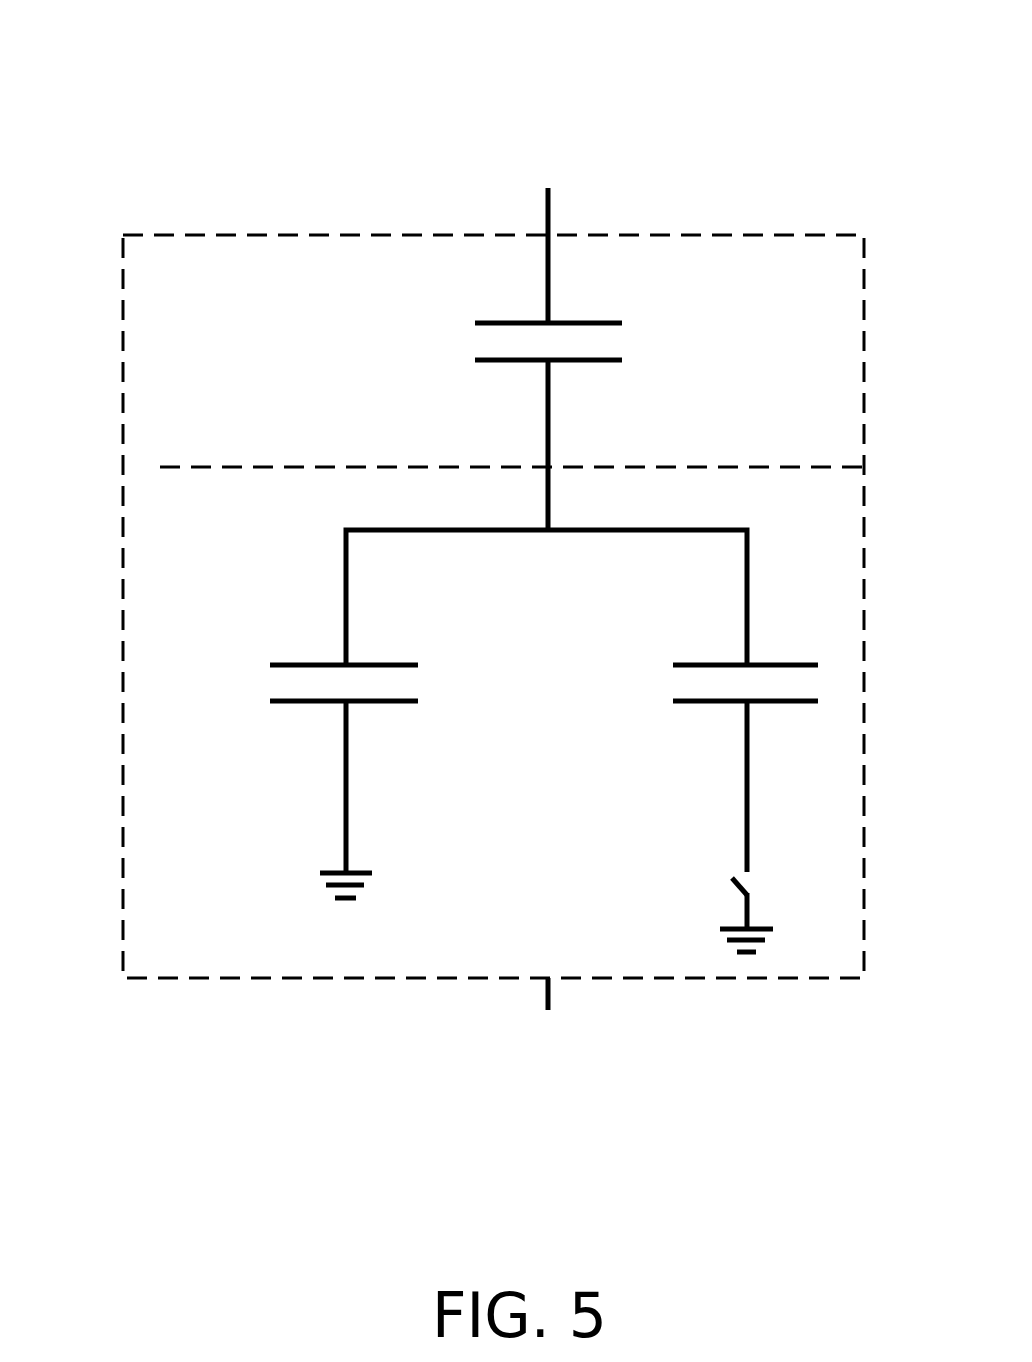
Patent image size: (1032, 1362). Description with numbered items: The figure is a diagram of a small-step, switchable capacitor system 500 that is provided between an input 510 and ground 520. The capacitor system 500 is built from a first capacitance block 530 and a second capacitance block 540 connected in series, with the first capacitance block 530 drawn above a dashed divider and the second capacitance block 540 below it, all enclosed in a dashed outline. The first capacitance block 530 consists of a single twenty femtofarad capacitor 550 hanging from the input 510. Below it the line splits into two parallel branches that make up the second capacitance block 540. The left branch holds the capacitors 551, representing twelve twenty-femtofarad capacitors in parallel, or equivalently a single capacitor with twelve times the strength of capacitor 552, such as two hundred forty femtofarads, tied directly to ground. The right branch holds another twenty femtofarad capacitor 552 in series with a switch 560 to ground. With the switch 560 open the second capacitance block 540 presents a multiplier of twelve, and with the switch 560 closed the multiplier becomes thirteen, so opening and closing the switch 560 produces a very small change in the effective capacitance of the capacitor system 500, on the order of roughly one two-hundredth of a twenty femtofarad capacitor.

The capacitor system 500 is at (297, 213).
The input 510 is at (548, 242).
The ground 520 is at (548, 1011).
The first capacitance block 530 is at (512, 358).
The second capacitance block 540 is at (458, 565).
The 20 fF capacitor 550 is at (595, 427).
The 12 x 20 fF capacitors 551 is at (280, 781).
The 20 fF capacitor 552 is at (688, 768).
The switch 560 is at (804, 911).